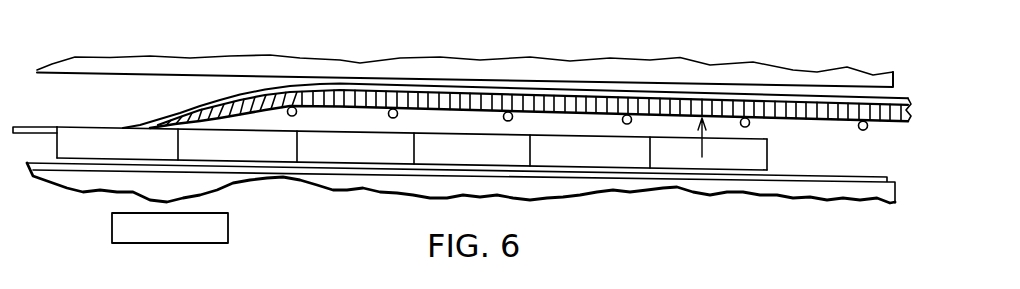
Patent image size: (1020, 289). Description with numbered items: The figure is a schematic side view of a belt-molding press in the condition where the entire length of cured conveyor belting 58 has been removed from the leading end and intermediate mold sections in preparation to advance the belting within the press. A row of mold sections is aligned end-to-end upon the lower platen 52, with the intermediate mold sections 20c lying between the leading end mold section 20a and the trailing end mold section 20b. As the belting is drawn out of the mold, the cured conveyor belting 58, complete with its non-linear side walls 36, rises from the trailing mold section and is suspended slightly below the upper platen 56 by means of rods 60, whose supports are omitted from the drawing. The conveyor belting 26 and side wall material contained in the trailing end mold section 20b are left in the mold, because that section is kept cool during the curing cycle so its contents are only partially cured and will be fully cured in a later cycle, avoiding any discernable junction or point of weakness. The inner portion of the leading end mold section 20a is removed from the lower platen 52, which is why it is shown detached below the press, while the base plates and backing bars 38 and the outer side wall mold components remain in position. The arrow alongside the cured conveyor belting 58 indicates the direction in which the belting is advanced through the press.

The upper platen 56 is at (441, 69).
The non-linear side walls 36 is at (602, 102).
The rods 60 is at (388, 114).
The conveyor belting 26 is at (30, 127).
The intermediate mold sections 20c is at (442, 152).
The trailing end mold section 20b is at (97, 145).
The base plates and backing bars 38 is at (787, 177).
The lower platen 52 is at (547, 183).
The leading end mold section 20a is at (213, 228).
The cured conveyor belting 58 is at (702, 157).